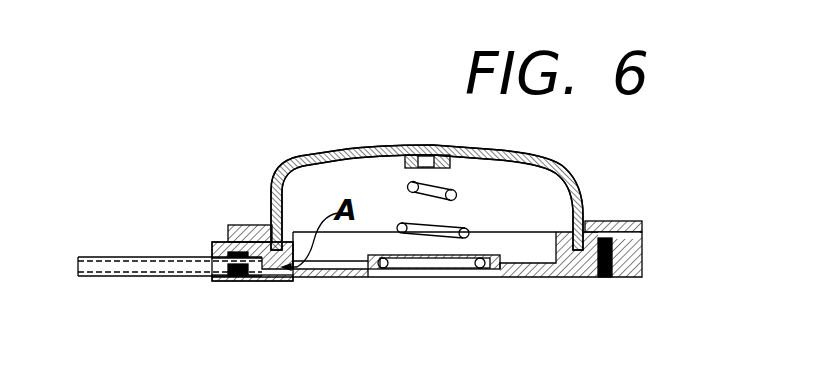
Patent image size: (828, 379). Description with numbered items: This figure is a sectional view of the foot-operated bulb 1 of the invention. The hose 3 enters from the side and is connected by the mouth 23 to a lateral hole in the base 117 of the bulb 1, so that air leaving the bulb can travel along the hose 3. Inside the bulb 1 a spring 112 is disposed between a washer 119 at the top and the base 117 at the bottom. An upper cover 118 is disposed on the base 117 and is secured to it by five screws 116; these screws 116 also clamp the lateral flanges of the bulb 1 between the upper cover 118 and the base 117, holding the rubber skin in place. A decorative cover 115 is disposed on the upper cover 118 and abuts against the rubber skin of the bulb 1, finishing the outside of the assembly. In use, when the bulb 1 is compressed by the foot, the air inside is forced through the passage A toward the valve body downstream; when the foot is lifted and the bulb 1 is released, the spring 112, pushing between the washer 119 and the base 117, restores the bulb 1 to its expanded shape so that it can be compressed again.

The bulb 1 is at (531, 158).
The hose 3 is at (183, 257).
The mouth 23 is at (230, 282).
The spring 112 is at (466, 230).
The decorative cover 115 is at (610, 221).
The screws 116 is at (643, 232).
The base 117 is at (439, 280).
The upper cover 118 is at (243, 226).
The washer 119 is at (368, 153).